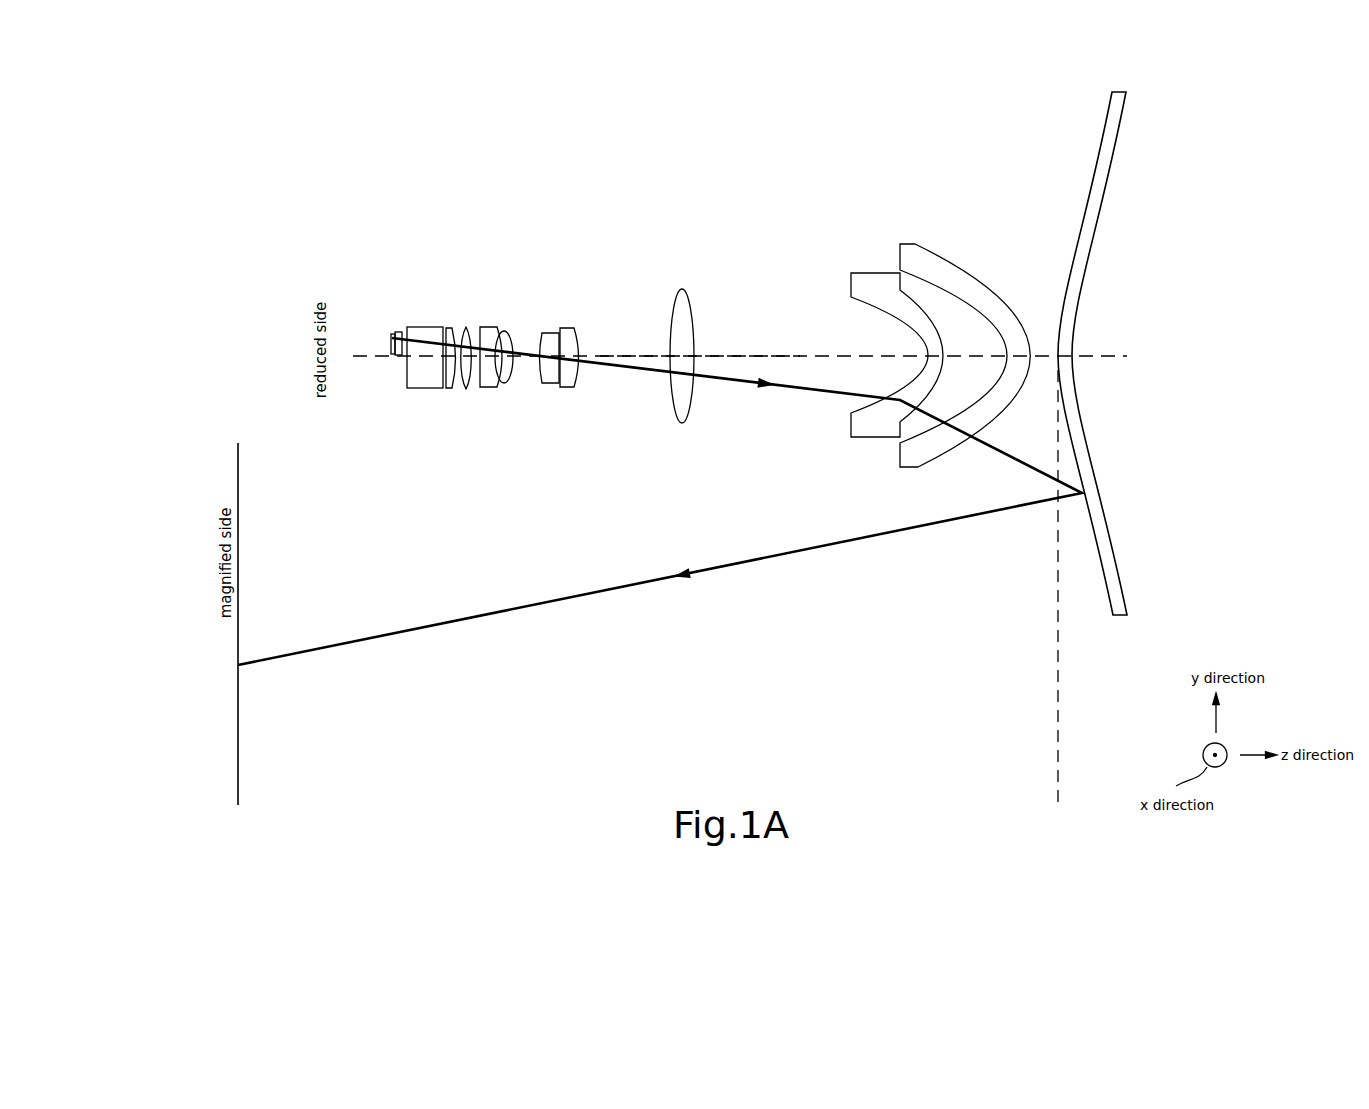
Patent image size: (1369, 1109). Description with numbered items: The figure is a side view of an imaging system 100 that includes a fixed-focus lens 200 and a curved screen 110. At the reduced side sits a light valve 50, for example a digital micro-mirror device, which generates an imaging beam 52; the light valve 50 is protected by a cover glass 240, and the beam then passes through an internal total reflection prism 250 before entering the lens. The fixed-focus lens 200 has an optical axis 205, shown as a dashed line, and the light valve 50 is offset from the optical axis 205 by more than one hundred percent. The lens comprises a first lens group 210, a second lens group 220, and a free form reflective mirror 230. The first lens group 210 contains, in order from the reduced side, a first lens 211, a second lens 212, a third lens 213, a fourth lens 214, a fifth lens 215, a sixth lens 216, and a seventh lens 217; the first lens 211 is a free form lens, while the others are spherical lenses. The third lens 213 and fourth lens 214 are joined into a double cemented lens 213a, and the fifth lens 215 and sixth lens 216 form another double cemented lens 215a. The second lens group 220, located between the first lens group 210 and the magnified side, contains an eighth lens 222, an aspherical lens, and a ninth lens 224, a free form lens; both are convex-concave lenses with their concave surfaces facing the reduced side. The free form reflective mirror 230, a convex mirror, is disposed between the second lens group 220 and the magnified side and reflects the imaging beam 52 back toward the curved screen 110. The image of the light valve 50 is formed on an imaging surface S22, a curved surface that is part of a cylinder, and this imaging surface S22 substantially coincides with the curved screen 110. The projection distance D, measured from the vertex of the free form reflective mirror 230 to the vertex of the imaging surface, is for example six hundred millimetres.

The imaging system 100 is at (1101, 843).
The curved screen 110 is at (238, 477).
The light valve 50 is at (391, 345).
The imaging beam 52 is at (822, 548).
The fixed-focus lens 200 is at (513, 287).
The optical axis 205 is at (752, 355).
The first lens group 210 is at (630, 482).
The first lens 211 is at (452, 390).
The second lens 212 is at (466, 390).
The third lens 213 is at (487, 378).
The double cemented lens 213a is at (483, 446).
The fourth lens 214 is at (512, 366).
The fifth lens 215 is at (557, 380).
The double cemented lens 215a is at (607, 446).
The sixth lens 216 is at (585, 380).
The seventh lens 217 is at (672, 397).
The second lens group 220 is at (843, 172).
The eighth lens 222 is at (870, 283).
The ninth lens 224 is at (910, 253).
The free form reflective mirror 230 is at (1113, 584).
The cover glass 240 is at (397, 331).
The internal total reflection prism 250 is at (421, 391).
The imaging surface S22 is at (241, 712).
The projection distance D is at (241, 770).